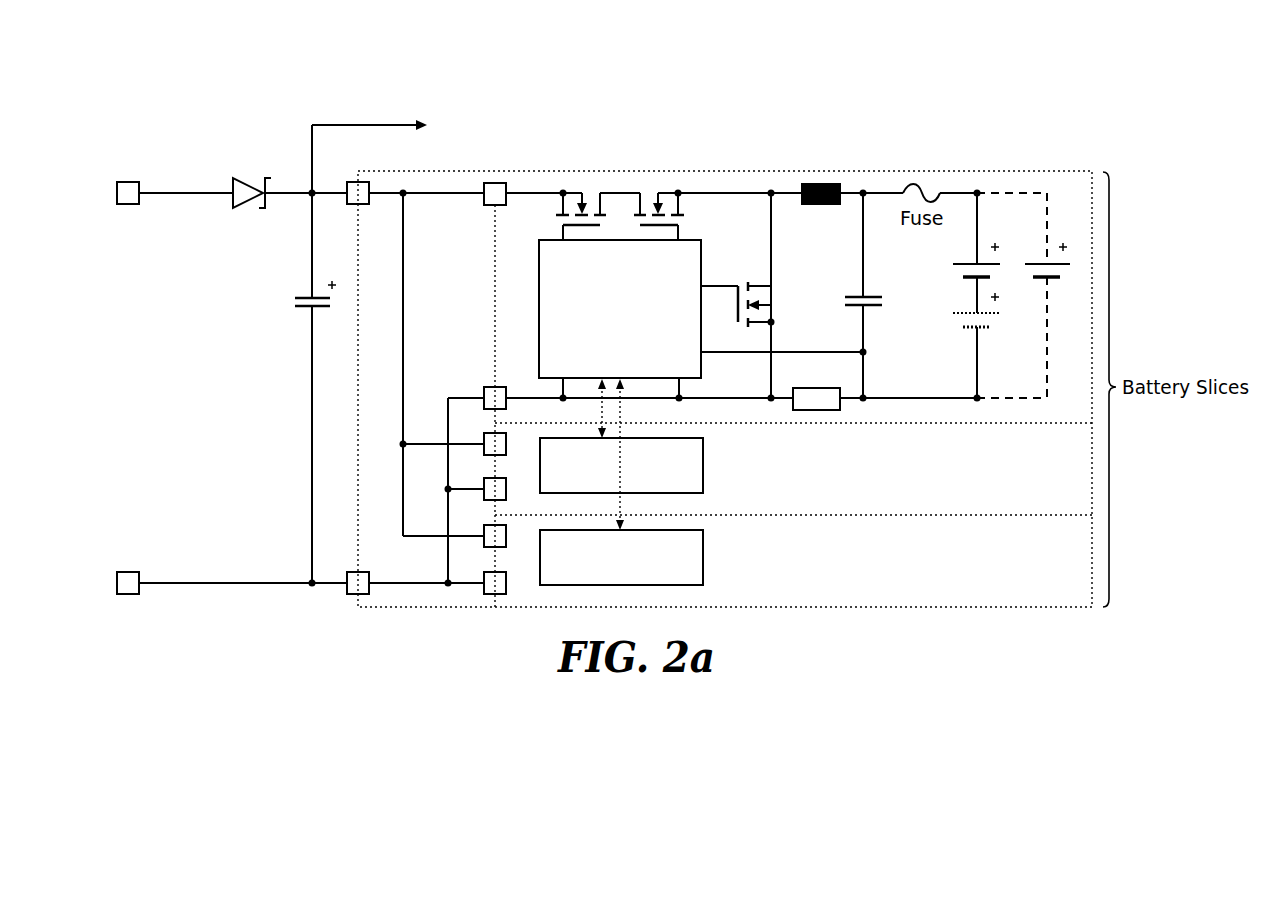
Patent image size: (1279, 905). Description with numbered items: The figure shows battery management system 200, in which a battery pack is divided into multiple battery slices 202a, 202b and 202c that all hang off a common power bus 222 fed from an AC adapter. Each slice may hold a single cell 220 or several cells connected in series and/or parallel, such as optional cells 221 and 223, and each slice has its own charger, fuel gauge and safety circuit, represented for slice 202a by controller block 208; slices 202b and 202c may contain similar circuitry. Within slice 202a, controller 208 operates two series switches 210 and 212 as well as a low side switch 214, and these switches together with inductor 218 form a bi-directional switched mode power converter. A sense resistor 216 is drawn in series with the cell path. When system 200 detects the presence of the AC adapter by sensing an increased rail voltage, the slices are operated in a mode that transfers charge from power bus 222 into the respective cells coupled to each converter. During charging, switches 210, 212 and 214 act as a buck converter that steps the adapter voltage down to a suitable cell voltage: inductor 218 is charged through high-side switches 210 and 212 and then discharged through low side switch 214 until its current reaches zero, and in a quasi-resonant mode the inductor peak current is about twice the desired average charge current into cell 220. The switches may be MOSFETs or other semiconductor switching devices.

The battery management system 200 is at (132, 59).
The power bus 222 is at (357, 125).
The series switch 210 is at (578, 187).
The series switch 212 is at (672, 187).
The controller block 208 is at (700, 265).
The low side switch 214 is at (773, 292).
The inductor 218 is at (835, 183).
The sense resistor 216 is at (830, 412).
The cell 220 is at (953, 268).
The optional cell 221 is at (953, 312).
The optional cell 223 is at (1038, 257).
The battery slice 202a is at (1078, 422).
The battery slice 202b is at (1078, 511).
The battery slice 202c is at (1078, 605).